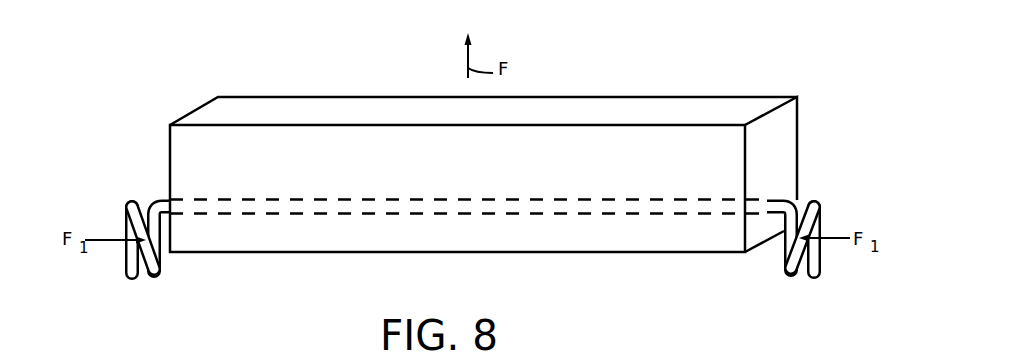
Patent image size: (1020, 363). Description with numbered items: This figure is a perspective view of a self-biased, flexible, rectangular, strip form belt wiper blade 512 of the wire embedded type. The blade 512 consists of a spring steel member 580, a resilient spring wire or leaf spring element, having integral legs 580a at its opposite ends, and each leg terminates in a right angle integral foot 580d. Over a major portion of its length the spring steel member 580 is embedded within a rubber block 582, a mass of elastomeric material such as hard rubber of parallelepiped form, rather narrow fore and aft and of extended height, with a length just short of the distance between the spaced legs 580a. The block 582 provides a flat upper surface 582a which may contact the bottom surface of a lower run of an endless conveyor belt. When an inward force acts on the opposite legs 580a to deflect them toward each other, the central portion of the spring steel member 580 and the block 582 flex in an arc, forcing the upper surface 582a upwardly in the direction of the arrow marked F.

The self-biased resilient belt wiper blade 512 is at (744, 80).
The rubber block 582 is at (483, 145).
The upper surface 582a is at (338, 62).
The spring steel member 580 is at (521, 217).
The legs 580a is at (783, 231).
The feet 580d is at (818, 249).